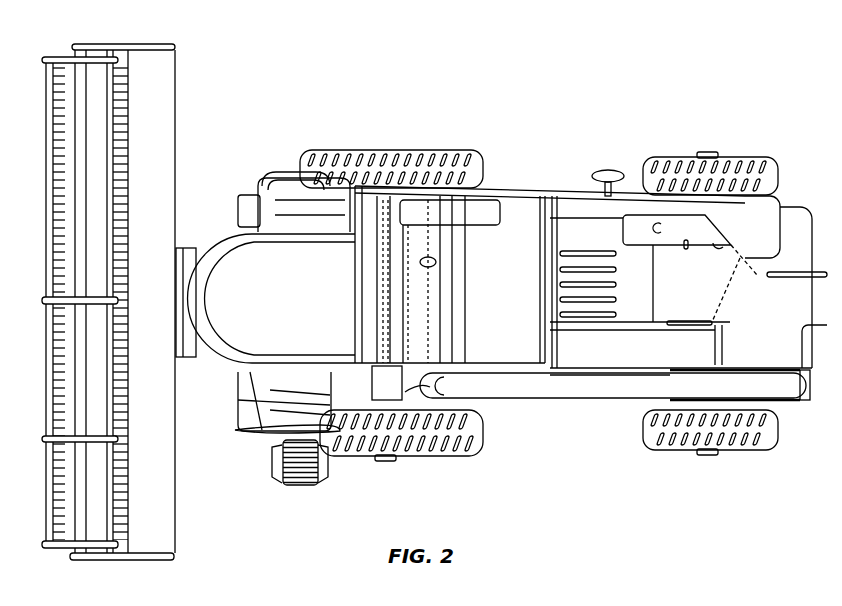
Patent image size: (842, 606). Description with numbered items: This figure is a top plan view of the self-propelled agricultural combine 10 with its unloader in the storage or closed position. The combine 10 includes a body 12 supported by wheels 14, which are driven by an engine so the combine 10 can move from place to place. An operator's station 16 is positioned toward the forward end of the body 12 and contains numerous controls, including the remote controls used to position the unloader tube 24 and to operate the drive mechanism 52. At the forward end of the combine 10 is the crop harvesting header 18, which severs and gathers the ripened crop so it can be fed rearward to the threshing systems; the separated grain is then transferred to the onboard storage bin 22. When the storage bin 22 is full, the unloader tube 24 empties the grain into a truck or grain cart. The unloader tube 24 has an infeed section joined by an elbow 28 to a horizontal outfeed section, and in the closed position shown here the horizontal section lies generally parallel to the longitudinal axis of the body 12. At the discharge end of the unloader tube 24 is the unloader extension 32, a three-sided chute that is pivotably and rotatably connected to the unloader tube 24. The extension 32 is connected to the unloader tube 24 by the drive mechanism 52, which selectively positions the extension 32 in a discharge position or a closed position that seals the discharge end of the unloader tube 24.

The agricultural combine 10 is at (641, 95).
The body 12 is at (495, 185).
The wheels 14 is at (338, 150).
The operator's station 16 is at (232, 263).
The crop harvesting header 18 is at (138, 46).
The onboard storage bin 22 is at (513, 222).
The unloader tube 24 is at (575, 385).
The elbow 28 is at (452, 388).
The unloader extension 32 is at (785, 400).
The drive mechanism 52 is at (645, 373).